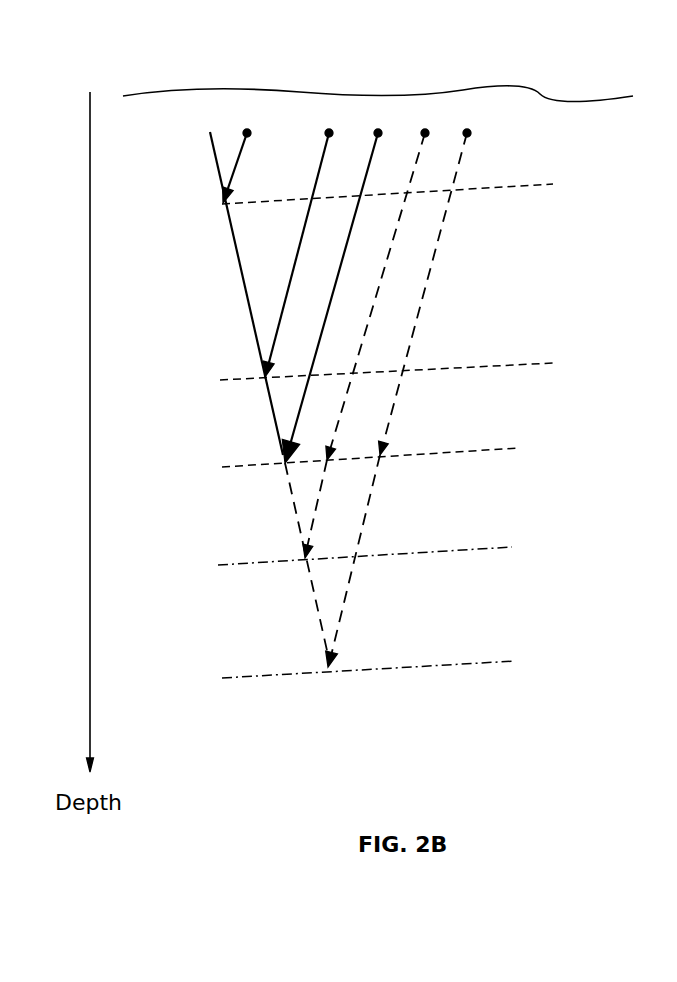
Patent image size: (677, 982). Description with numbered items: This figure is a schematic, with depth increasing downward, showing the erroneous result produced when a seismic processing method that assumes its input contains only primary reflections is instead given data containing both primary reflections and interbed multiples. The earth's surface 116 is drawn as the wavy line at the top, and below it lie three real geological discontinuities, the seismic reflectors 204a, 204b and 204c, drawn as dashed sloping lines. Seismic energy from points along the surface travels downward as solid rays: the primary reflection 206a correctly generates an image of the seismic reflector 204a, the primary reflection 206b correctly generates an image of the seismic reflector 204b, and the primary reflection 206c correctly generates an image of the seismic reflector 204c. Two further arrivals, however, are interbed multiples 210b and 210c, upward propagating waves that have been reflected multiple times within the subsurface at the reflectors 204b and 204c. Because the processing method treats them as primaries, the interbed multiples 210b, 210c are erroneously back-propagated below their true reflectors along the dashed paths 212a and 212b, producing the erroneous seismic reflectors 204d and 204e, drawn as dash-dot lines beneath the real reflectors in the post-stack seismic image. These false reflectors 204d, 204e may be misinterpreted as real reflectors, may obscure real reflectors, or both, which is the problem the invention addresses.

The earth's surface 116 is at (503, 93).
The seismic reflector 204a is at (532, 186).
The seismic reflector 204b is at (530, 364).
The seismic reflector 204c is at (505, 451).
The erroneous seismic reflector 204d is at (500, 548).
The erroneous seismic reflector 204e is at (503, 661).
The primary reflection 206a is at (230, 183).
The primary reflection 206b is at (277, 335).
The primary reflection 206c is at (295, 430).
The interbed multiple 210b is at (400, 223).
The interbed multiple 210c is at (428, 272).
The erroneous back-propagation 212a is at (318, 487).
The erroneous back-propagation 212b is at (345, 597).